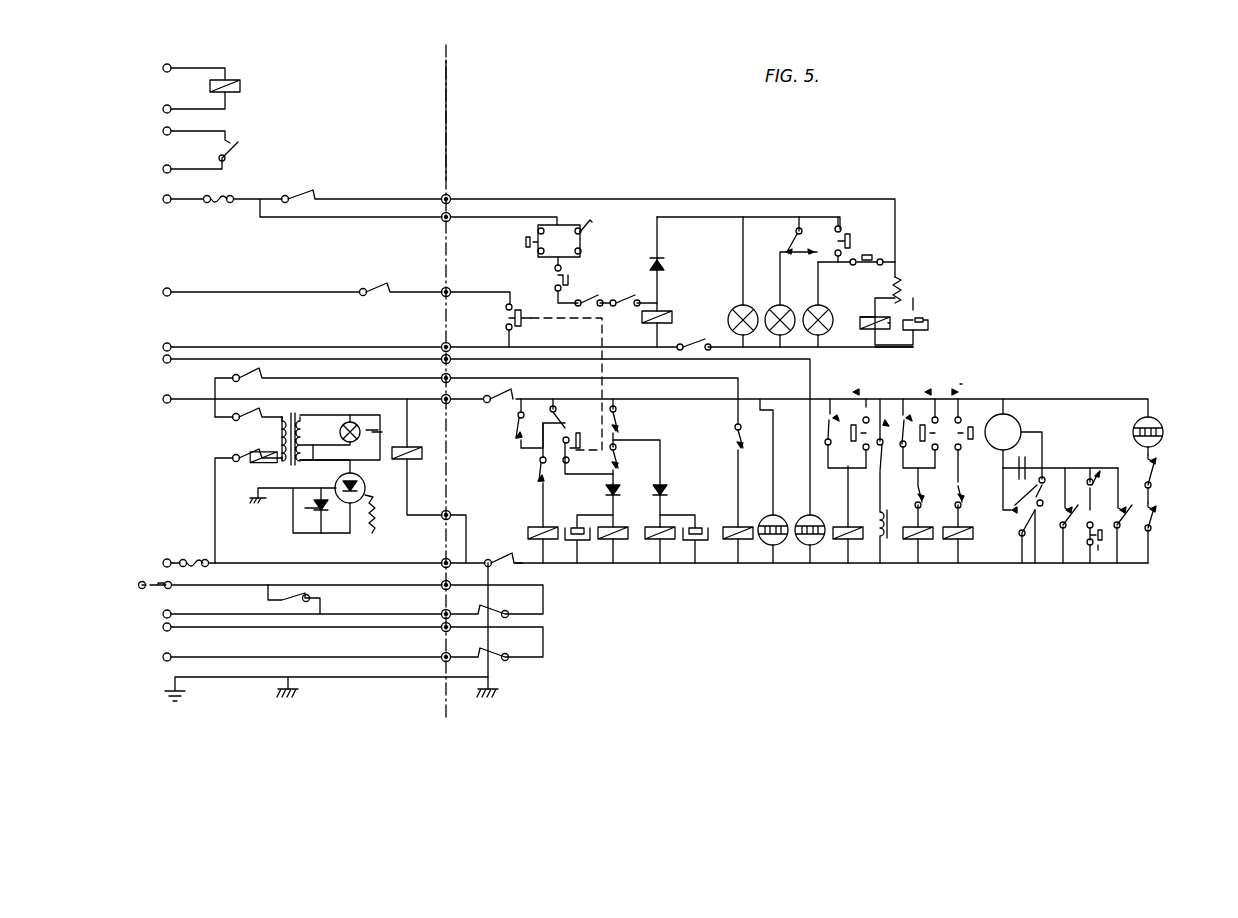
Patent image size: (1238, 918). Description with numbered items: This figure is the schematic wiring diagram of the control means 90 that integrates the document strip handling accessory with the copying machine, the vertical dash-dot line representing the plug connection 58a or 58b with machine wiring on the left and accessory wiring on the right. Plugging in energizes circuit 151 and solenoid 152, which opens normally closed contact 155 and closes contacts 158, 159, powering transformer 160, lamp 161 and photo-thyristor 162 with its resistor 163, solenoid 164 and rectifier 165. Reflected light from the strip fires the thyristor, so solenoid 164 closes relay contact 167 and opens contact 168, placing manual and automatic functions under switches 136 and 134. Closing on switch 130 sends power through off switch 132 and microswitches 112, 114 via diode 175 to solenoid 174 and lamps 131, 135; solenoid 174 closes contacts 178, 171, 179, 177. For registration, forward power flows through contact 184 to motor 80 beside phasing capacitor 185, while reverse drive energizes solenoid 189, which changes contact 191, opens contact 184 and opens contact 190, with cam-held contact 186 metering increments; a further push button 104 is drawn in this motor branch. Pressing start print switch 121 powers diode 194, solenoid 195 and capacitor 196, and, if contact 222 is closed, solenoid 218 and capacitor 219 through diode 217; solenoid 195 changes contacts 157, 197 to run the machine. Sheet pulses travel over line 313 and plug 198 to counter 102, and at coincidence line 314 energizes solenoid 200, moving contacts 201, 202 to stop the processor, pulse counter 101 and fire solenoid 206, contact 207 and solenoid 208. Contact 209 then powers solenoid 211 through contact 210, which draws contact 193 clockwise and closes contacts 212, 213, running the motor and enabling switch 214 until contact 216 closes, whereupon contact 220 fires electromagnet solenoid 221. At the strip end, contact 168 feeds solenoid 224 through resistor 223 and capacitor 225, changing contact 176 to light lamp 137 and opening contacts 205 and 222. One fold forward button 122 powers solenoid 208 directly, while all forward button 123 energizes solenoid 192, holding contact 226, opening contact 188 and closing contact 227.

The electrical connection 58a is at (448, 100).
The electrical connection 58b is at (474, 130).
The motor 80 is at (1008, 414).
The control means 90 is at (1140, 416).
The counter 101 is at (770, 564).
The counter 102 is at (806, 546).
The push button switch 104 is at (1097, 554).
The microswitch 112 is at (590, 294).
The microswitch 114 is at (620, 298).
The start print switch 121 is at (505, 326).
The one fold forward button 122 is at (828, 464).
The all forward button 123 is at (966, 364).
The on switch 130 is at (516, 239).
The on lamp 131 is at (736, 302).
The off switch 132 is at (529, 280).
The automatic switch 134 is at (878, 248).
The auto lamp 135 is at (773, 302).
The manual button 136 is at (854, 236).
The lamp 137 is at (816, 336).
The circuit 151 is at (325, 396).
The solenoid 152 is at (385, 452).
The normally closed contact 155 is at (290, 592).
The contact 157 is at (520, 615).
The normally open contact 158 is at (215, 418).
The normally open contact 159 is at (235, 456).
The transformer 160 is at (275, 436).
The lamp 161 is at (351, 417).
The photo-thyristor 162 is at (336, 476).
The resistor 163 is at (378, 513).
The solenoid 164 is at (270, 507).
The rectifier 165 is at (315, 533).
The normally open relay contact 167 is at (378, 284).
The normally closed contact 168 is at (307, 194).
The contact 171 is at (495, 402).
The solenoid 174 is at (660, 310).
The diode 175 is at (666, 262).
The contact 176 is at (781, 246).
The contact 177 is at (696, 342).
The contact 178 is at (601, 223).
The contact 179 is at (525, 578).
The normally closed contact 184 is at (1091, 495).
The phasing capacitor 185 is at (1026, 459).
The contact 186 is at (1040, 496).
The normally closed contact 188 is at (957, 488).
The solenoid 189 is at (957, 539).
The contact 190 is at (918, 498).
The contact 191 is at (1014, 540).
The solenoid 192 is at (918, 539).
The contact 193 is at (603, 396).
The diode 194 is at (623, 483).
The solenoid 195 is at (612, 550).
The capacitor 196 is at (577, 552).
The contact 197 is at (505, 662).
The plug 198 is at (440, 347).
The solenoid 200 is at (240, 86).
The contact 201 is at (234, 147).
The contact 202 is at (248, 365).
The contact 205 is at (736, 426).
The solenoid 206 is at (723, 526).
The contact 207 is at (826, 413).
The solenoid 208 is at (848, 538).
The normally open contact 209 is at (507, 445).
The normally closed contact 210 is at (534, 480).
The solenoid 211 is at (546, 525).
The contact 212 is at (1060, 532).
The contact 213 is at (1151, 512).
The switch 214 is at (1154, 472).
The contact 216 is at (623, 415).
The diode 217 is at (668, 496).
The solenoid 218 is at (658, 547).
The capacitor 219 is at (738, 544).
The contact 220 is at (907, 400).
The electromagnet solenoid 221 is at (878, 544).
The contact 222 is at (623, 467).
The resistor 223 is at (903, 284).
The solenoid 224 is at (864, 314).
The capacitor 225 is at (932, 306).
The contact 226 is at (906, 428).
The contact 227 is at (1127, 528).
The line 313 is at (192, 354).
The line 314 is at (200, 58).